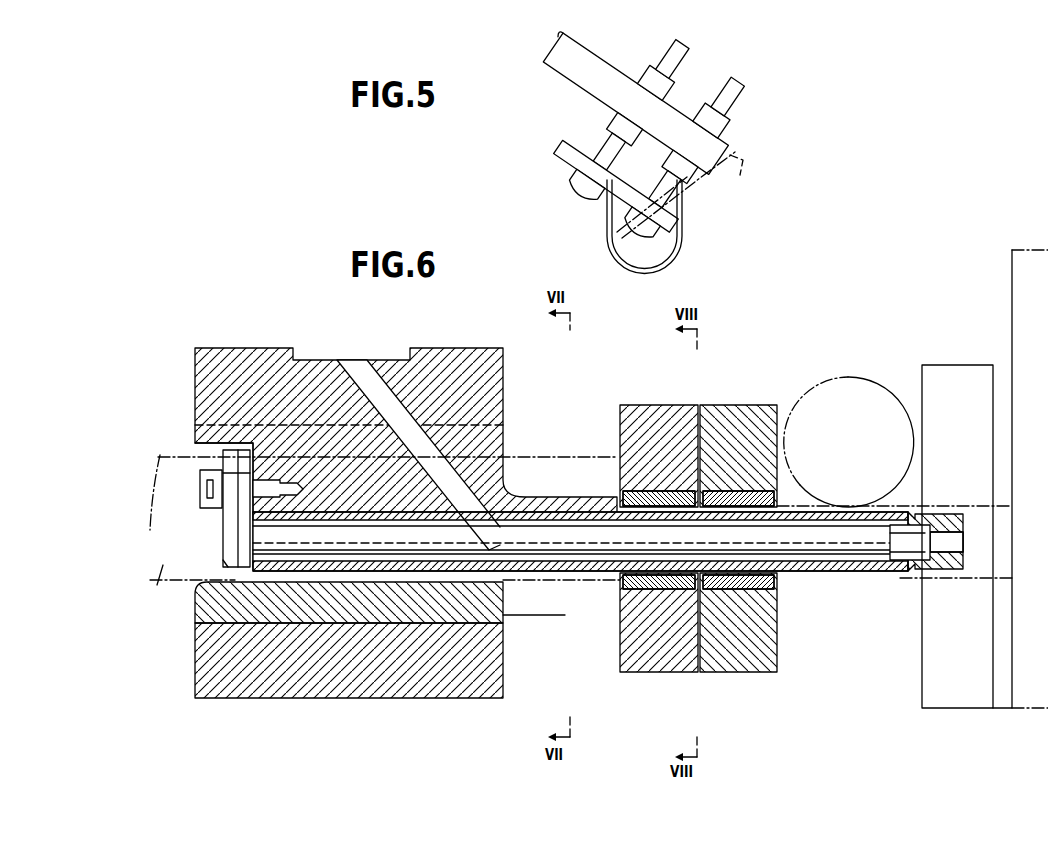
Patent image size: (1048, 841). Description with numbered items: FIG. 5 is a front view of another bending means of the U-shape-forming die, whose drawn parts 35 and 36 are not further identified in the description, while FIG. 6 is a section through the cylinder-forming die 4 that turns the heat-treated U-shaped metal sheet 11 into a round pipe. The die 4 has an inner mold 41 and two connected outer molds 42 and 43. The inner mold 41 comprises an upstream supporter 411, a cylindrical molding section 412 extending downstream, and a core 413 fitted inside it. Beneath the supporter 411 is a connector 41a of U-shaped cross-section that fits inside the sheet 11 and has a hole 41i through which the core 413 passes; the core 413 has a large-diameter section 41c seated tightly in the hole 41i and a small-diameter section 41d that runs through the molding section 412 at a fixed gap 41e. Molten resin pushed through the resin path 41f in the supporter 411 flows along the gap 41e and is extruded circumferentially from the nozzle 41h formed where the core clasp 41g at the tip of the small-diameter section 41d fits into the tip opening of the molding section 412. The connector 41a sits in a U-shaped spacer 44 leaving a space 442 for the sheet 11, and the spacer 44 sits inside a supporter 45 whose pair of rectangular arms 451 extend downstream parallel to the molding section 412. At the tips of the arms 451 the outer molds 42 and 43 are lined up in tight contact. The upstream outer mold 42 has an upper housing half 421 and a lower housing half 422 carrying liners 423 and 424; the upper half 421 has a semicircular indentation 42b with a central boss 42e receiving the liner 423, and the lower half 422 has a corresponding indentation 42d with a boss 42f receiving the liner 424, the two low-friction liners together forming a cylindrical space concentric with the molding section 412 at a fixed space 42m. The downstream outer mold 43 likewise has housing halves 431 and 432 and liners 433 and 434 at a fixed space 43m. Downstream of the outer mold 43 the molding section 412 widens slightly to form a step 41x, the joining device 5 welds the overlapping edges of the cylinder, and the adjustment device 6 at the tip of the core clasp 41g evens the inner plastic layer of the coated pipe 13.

In FIG. 5, the clamp plate 35 is at (563, 153).
In FIG. 5, the U-bolt 36 is at (607, 231).
In FIG. 6, the cylinder-forming die 4 is at (798, 672).
In FIG. 6, the joining device 5 is at (850, 376).
In FIG. 6, the adjustment device 6 is at (940, 708).
In FIG. 6, the U-shaped metal sheet 11 is at (158, 582).
In FIG. 6, the pipe 13 is at (980, 578).
In FIG. 6, the inner mold 41 is at (293, 357).
In FIG. 6, the supporter 411 is at (231, 356).
In FIG. 6, the molding section 412 is at (889, 578).
In FIG. 6, the core 413 is at (595, 678).
In FIG. 6, the connector 41a is at (507, 470).
In FIG. 6, the large-diameter section 41c is at (515, 580).
In FIG. 6, the small-diameter section 41d is at (561, 572).
In FIG. 6, the gap 41e is at (821, 572).
In FIG. 6, the resin path 41f is at (362, 378).
In FIG. 6, the core clasp 41g is at (943, 512).
In FIG. 6, the nozzle 41h is at (920, 512).
In FIG. 6, the hole 41i is at (193, 527).
In FIG. 6, the step 41x is at (779, 574).
In FIG. 6, the outer mold 42 is at (640, 408).
In FIG. 6, the upper housing half 421 is at (657, 404).
In FIG. 6, the lower housing half 422 is at (640, 667).
In FIG. 6, the liner 423 is at (612, 493).
In FIG. 6, the liner 424 is at (565, 615).
In FIG. 6, the indentation 42b is at (615, 490).
In FIG. 6, the indentation 42d is at (697, 588).
In FIG. 6, the boss 42e is at (687, 490).
In FIG. 6, the boss 42f is at (673, 590).
In FIG. 6, the fixed space 42m is at (606, 499).
In FIG. 6, the outer mold 43 is at (766, 428).
In FIG. 6, the housing half 431 is at (730, 404).
In FIG. 6, the housing half 432 is at (757, 666).
In FIG. 6, the liner 433 is at (777, 497).
In FIG. 6, the liner 434 is at (777, 578).
In FIG. 6, the fixed space 43m is at (778, 580).
In FIG. 6, the spacer 44 is at (193, 617).
In FIG. 6, the space 442 is at (427, 576).
In FIG. 6, the supporter 45 is at (262, 685).
In FIG. 6, the arms 451 is at (606, 496).